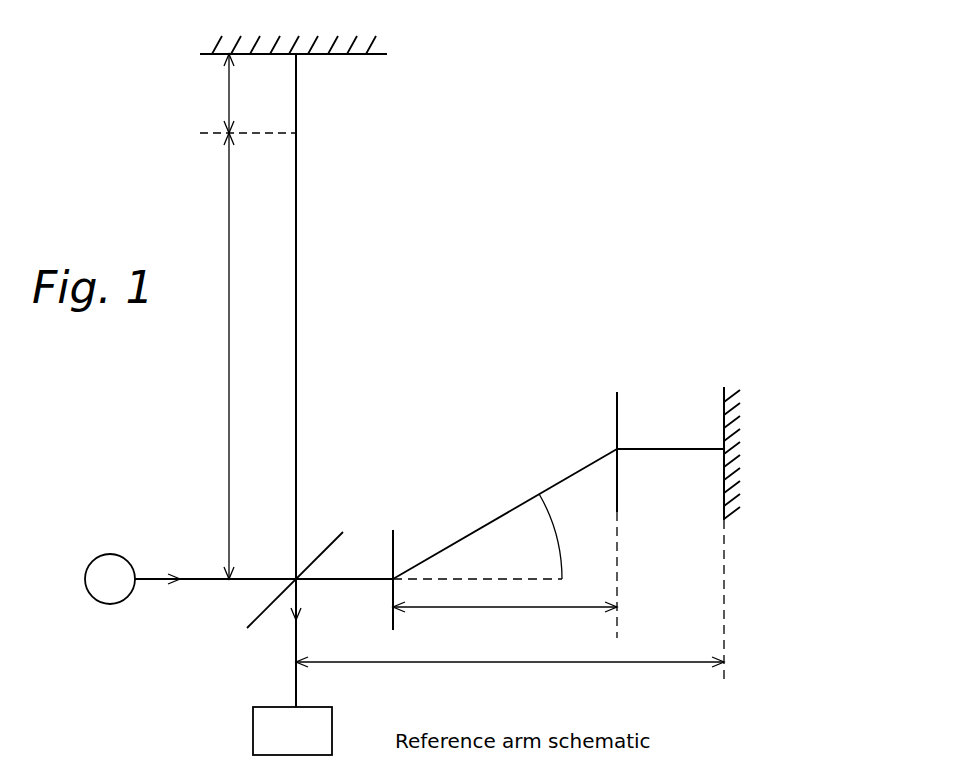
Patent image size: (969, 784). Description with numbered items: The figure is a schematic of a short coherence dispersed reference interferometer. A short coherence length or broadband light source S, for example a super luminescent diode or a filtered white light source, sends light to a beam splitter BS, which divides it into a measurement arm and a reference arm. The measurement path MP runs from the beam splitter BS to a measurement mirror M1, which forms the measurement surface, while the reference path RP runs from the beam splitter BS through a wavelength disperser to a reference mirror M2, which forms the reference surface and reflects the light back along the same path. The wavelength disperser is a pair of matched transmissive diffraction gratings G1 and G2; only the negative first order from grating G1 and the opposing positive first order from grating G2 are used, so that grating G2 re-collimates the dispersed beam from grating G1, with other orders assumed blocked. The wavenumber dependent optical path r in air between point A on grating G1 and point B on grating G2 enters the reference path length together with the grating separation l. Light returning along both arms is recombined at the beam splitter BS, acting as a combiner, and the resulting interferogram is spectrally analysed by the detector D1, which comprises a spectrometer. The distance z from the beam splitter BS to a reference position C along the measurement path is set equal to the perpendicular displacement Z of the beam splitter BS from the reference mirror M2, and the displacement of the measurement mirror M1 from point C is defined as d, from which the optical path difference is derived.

The measurement mirror M1 is at (311, 51).
The reference mirror M2 is at (723, 520).
The first diffraction grating G1 is at (391, 564).
The second diffraction grating G2 is at (664, 499).
The beam splitter BS is at (273, 591).
The short coherence length or broadband light source S is at (239, 579).
The detector D1 is at (292, 731).
The measurement path MP is at (296, 348).
The reference path RP is at (343, 582).
The point A is at (378, 566).
The point B is at (629, 477).
The reference position C is at (258, 134).
The displacement of the measurement mirror d is at (215, 93).
The distance between beam splitter and reference position z is at (215, 356).
The perpendicular displacement of the beam splitter from the reference mirror Z is at (510, 677).
The distance between the diffraction gratings l is at (505, 620).
The wavenumber dependent optical path r is at (505, 514).